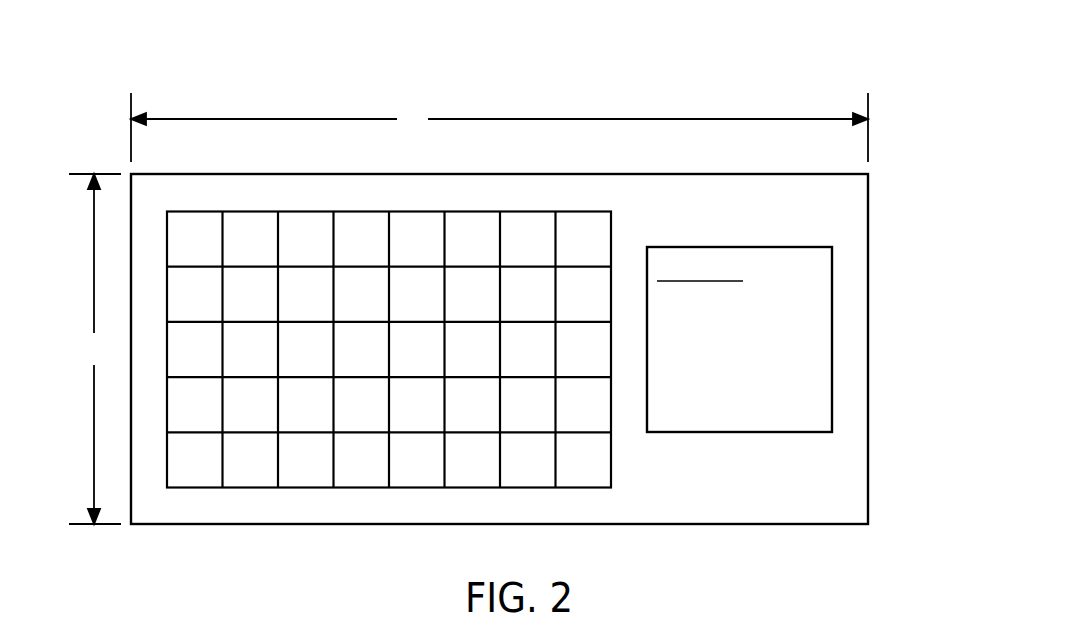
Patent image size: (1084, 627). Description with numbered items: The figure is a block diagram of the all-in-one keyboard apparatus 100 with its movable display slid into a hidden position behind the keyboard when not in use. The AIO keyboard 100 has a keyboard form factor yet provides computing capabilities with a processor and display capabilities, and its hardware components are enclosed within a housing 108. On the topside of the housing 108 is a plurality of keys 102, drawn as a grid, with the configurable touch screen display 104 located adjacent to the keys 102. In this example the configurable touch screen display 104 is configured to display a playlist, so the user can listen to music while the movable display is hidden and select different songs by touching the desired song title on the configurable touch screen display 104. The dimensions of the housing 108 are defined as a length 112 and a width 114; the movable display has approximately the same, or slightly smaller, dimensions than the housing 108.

The all-in-one keyboard apparatus 100 is at (118, 37).
The plurality of keys 102 is at (471, 211).
The configurable touch screen display 104 is at (733, 247).
The housing 108 is at (868, 350).
The length 112 is at (697, 118).
The width 114 is at (94, 282).